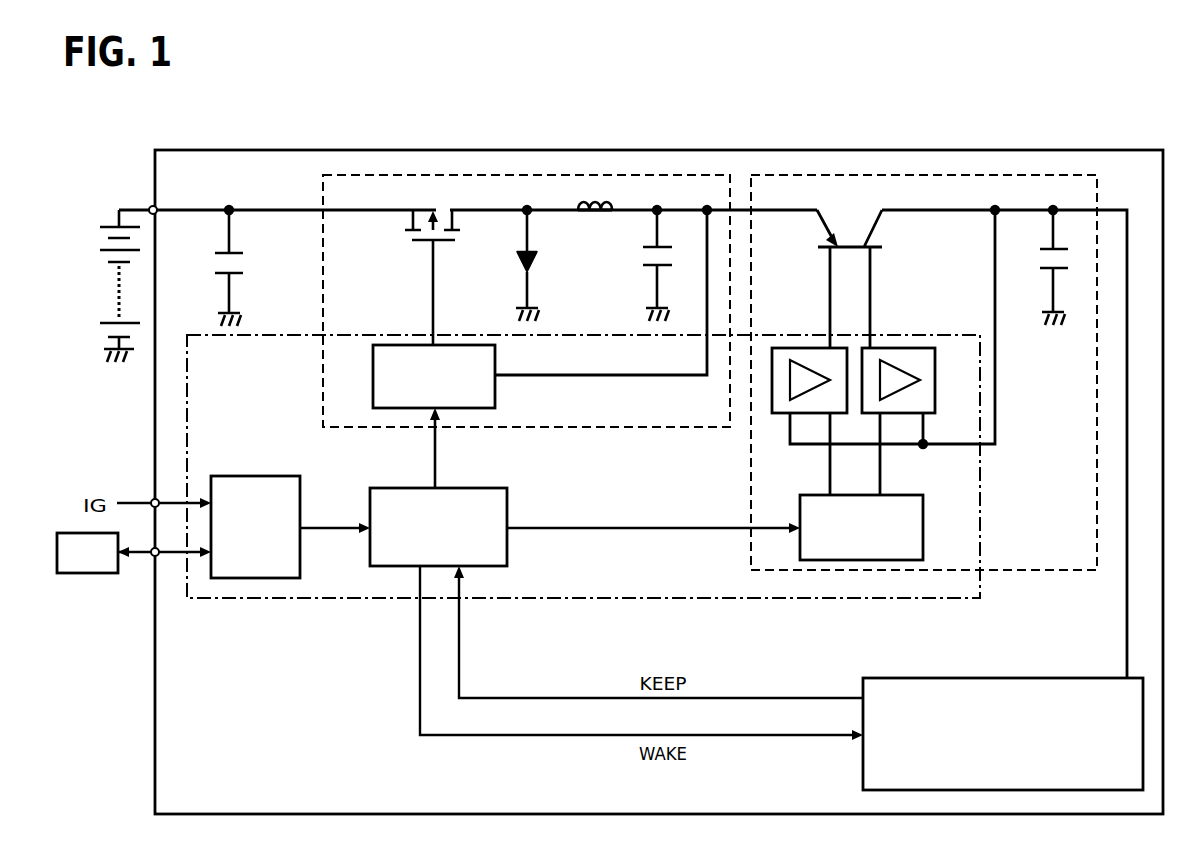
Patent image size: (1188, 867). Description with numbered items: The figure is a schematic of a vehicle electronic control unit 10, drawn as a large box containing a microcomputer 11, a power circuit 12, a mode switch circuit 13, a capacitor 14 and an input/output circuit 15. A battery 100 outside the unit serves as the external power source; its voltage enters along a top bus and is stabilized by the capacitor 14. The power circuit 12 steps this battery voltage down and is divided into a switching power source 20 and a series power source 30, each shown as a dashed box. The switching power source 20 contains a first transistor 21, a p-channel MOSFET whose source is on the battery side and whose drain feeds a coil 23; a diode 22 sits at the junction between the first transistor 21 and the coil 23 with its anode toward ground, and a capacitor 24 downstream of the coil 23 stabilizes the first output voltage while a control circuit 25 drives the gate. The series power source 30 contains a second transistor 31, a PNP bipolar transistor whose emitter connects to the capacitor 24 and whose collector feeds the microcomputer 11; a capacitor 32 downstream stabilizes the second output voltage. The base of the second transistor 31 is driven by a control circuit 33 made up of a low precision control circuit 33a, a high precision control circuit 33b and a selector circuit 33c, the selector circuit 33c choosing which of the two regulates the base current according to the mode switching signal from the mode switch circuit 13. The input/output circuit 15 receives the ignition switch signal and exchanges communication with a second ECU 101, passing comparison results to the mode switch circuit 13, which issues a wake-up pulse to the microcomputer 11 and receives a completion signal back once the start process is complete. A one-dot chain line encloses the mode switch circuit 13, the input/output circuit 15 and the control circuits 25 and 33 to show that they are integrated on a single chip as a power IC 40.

The electronic control unit 10 is at (1150, 149).
The microcomputer 11 is at (1080, 678).
The power circuit 12 is at (690, 331).
The mode switch circuit 13 is at (507, 493).
The capacitor 14 is at (243, 255).
The input/output circuit 15 is at (300, 486).
The switching power source 20 is at (548, 172).
The first transistor 21 is at (413, 227).
The diode 22 is at (538, 262).
The coil 23 is at (595, 200).
The capacitor 24 is at (645, 267).
The control circuit 25 is at (373, 376).
The series power source 30 is at (1005, 172).
The second transistor 31 is at (872, 233).
The capacitor 32 is at (1040, 266).
The control circuit 33 is at (904, 387).
The low precision control circuit 33a is at (920, 348).
The high precision control circuit 33b is at (790, 348).
The selector circuit 33c is at (923, 535).
The power IC 40 is at (280, 600).
The battery 100 is at (100, 227).
The second Electronic Control Unit (ECU) 101 is at (93, 575).